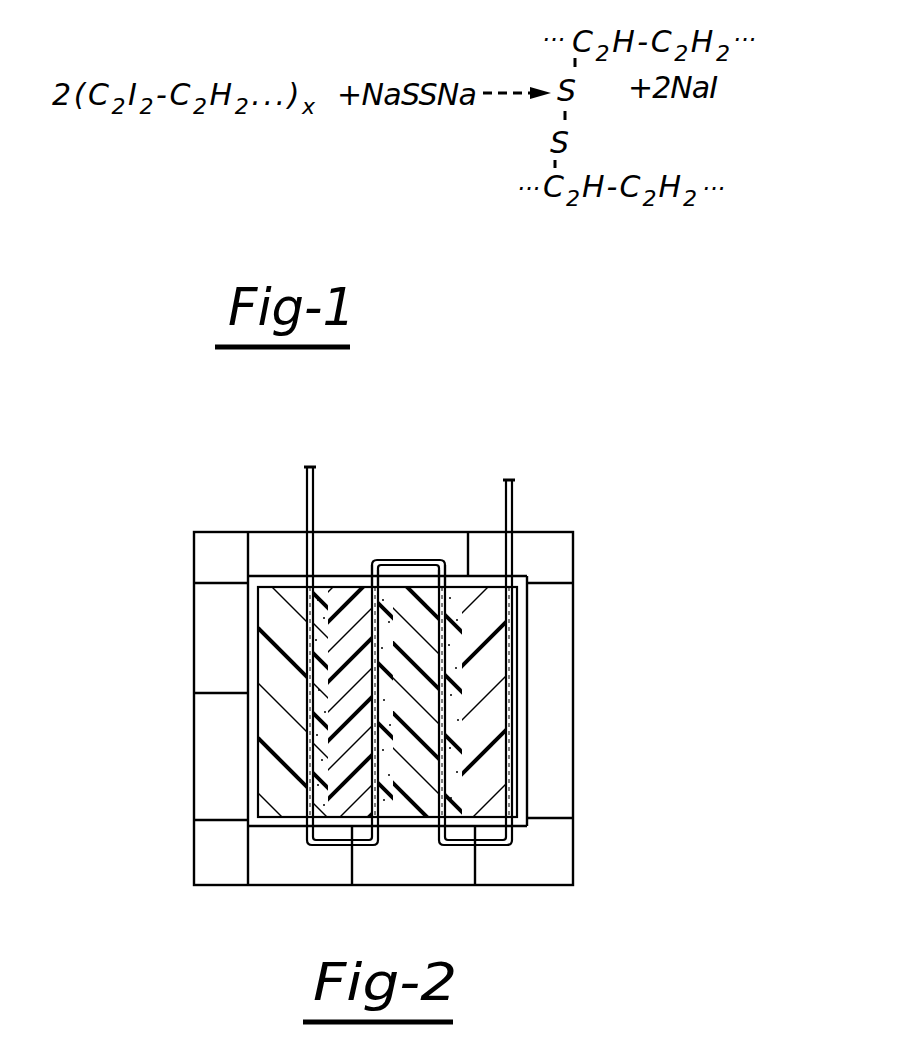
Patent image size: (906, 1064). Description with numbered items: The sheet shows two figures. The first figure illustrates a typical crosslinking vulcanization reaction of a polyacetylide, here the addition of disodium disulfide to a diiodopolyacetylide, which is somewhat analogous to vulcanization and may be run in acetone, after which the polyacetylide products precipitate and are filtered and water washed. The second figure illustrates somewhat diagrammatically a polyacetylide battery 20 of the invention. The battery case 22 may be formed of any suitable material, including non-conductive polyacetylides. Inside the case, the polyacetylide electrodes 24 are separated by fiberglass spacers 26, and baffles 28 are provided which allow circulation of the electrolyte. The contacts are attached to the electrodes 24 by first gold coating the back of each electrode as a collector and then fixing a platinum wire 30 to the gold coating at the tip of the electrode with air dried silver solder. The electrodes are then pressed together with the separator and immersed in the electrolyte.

The polyacetylide battery 20 is at (690, 628).
The battery case 22 is at (230, 887).
The electrodes 24 is at (425, 765).
The fiberglass spacers 26 is at (383, 660).
The baffles 28 is at (218, 748).
The platinum wire 30 is at (407, 560).